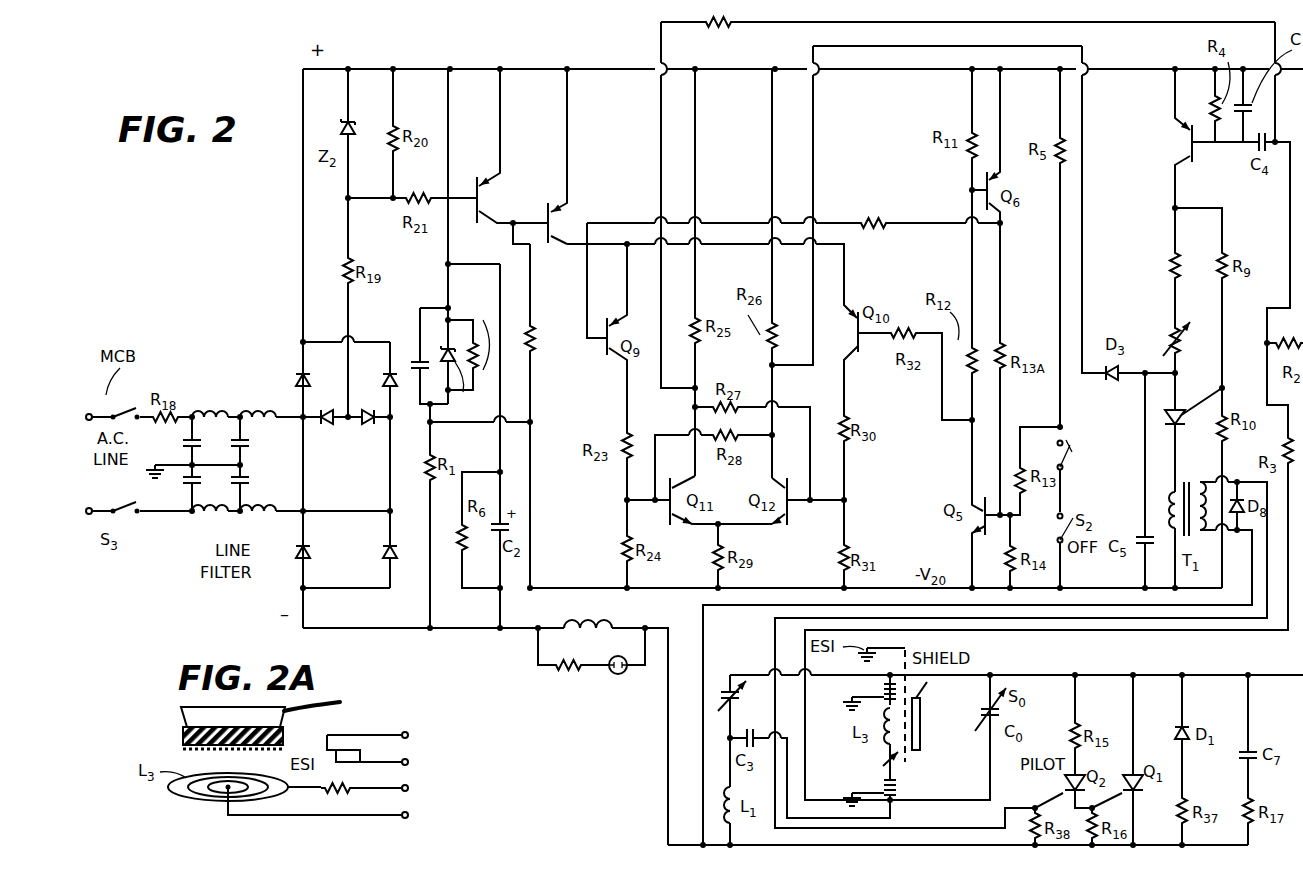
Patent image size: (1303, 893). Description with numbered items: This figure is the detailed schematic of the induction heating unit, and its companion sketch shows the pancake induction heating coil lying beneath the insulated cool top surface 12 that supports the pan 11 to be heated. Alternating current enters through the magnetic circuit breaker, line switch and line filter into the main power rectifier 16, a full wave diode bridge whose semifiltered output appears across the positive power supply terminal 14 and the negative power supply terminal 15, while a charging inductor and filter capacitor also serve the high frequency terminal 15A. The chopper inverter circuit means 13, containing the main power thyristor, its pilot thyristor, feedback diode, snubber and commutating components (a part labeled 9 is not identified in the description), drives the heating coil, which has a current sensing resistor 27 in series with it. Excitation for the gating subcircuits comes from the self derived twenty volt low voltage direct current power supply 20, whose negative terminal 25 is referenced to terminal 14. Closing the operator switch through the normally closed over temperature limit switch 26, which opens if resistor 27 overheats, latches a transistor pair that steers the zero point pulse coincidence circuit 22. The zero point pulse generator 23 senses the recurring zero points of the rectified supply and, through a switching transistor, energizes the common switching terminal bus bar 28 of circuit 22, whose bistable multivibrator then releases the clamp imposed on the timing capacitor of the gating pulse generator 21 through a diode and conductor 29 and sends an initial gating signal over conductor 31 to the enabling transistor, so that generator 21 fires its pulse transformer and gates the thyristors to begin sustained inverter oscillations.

In FIG. 2, the variable capacitor C1 / tuning element 9 is at (727, 686).
In FIG. 2A, the pan 11 is at (180, 712).
In FIG. 2A, the insulated cool top surface 12 is at (183, 736).
In FIG. 2, the inverter circuit means 13 is at (941, 724).
In FIG. 2, the positive polarity power supply terminal 14 is at (418, 68).
In FIG. 2, the negative polarity power supply terminal 15 is at (450, 638).
In FIG. 2, the power supply terminal 15A is at (896, 846).
In FIG. 2, the main power rectifier 16 is at (357, 463).
In FIG. 2, the low voltage direct current power supply 20 is at (449, 245).
In FIG. 2, the gating pulse generator 21 is at (1176, 328).
In FIG. 2, the zero point pulse coincidence circuit 22 is at (793, 265).
In FIG. 2, the zero point pulse generator 23 is at (518, 328).
In FIG. 2, the negative terminal of low voltage direct current power supply 25 is at (596, 584).
In FIG. 2, the over temperature limit switch 26 is at (1057, 444).
In FIG. 2A, the over temperature limit switch 26 is at (362, 758).
In FIG. 2, the current sensing resistor 27 is at (900, 757).
In FIG. 2A, the current sensing resistor 27 is at (318, 800).
In FIG. 2, the common switching terminal bus bar 28 is at (718, 244).
In FIG. 2, the conductor 29 is at (948, 44).
In FIG. 2, the conductor 31 is at (661, 176).